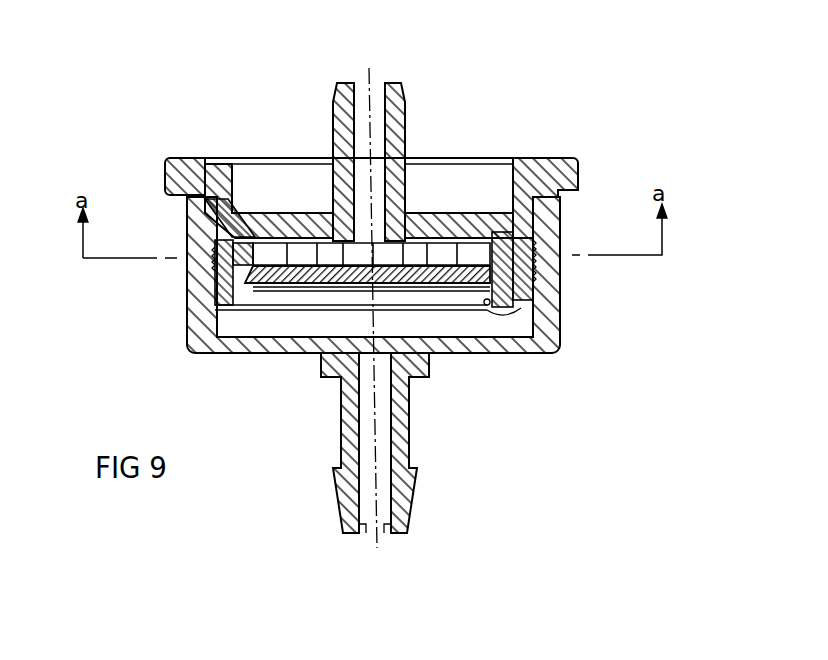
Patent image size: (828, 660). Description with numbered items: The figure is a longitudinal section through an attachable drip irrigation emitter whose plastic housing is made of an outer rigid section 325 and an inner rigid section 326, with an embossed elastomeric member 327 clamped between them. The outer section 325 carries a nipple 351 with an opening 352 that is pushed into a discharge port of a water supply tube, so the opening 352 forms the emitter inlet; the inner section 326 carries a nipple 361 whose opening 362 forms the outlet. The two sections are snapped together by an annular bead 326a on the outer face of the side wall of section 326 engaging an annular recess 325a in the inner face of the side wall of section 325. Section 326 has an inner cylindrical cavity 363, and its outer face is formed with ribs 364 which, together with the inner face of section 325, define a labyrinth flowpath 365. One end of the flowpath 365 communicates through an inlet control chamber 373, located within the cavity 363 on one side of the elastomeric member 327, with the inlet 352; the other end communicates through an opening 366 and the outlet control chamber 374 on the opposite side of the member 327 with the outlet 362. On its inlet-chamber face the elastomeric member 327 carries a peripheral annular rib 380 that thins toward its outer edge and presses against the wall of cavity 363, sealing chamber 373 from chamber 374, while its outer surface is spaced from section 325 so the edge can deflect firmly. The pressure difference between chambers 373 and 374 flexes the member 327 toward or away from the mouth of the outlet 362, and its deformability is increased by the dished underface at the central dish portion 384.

The outer rigid housing section 325 is at (157, 170).
The annular recess 325a is at (186, 231).
The inner rigid housing section 326 is at (454, 202).
The annular bead 326a is at (200, 158).
The embossed elastomeric member 327 is at (450, 285).
The nipple 351 is at (412, 443).
The opening 352 is at (370, 438).
The nipple 361 is at (398, 83).
The opening 362 is at (358, 102).
The inner cylindrical cavity 363 is at (535, 227).
The ribs 364 is at (187, 283).
The labyrinth flowpath 365 is at (188, 308).
The opening 366 is at (247, 240).
The inlet control chamber 373 is at (310, 293).
The outlet control chamber 374 is at (298, 285).
The annular rib 380 is at (523, 310).
The central dish portion 384 is at (423, 283).